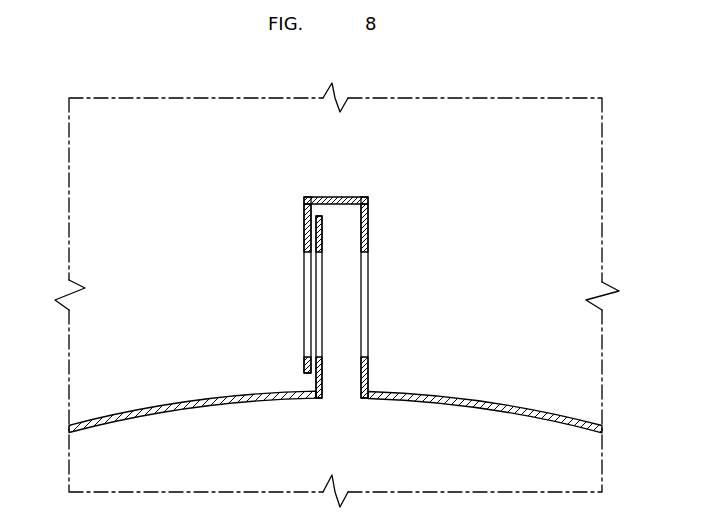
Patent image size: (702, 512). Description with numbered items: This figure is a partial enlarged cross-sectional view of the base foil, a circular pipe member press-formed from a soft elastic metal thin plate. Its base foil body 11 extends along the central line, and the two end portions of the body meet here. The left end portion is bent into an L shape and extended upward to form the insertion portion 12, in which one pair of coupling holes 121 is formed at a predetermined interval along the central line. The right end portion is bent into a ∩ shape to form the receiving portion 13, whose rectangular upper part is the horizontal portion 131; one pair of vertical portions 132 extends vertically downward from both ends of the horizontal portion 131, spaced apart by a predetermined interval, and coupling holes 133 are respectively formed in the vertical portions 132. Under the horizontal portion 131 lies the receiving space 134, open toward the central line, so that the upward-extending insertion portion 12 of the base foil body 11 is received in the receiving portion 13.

The base foil body 11 is at (522, 406).
The insertion portion 12 is at (276, 336).
The coupling holes 121 is at (318, 356).
The receiving portion 13 is at (341, 254).
The horizontal portion 131 is at (323, 197).
The vertical portions 132 is at (304, 229).
The coupling holes 133 is at (305, 342).
The receiving space 134 is at (348, 289).